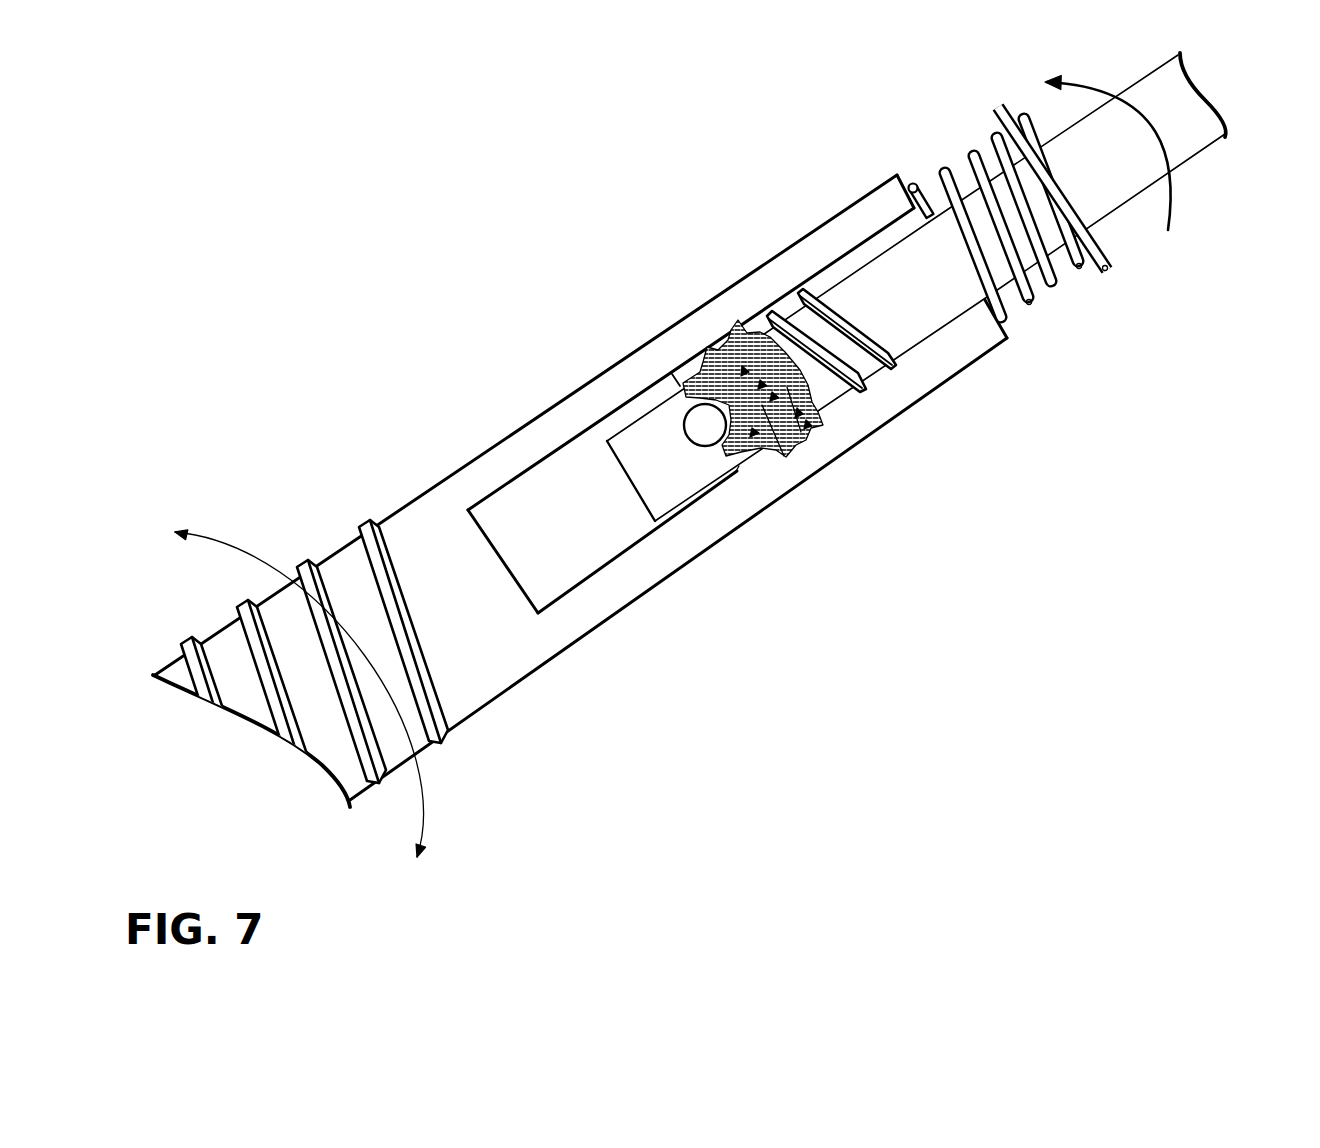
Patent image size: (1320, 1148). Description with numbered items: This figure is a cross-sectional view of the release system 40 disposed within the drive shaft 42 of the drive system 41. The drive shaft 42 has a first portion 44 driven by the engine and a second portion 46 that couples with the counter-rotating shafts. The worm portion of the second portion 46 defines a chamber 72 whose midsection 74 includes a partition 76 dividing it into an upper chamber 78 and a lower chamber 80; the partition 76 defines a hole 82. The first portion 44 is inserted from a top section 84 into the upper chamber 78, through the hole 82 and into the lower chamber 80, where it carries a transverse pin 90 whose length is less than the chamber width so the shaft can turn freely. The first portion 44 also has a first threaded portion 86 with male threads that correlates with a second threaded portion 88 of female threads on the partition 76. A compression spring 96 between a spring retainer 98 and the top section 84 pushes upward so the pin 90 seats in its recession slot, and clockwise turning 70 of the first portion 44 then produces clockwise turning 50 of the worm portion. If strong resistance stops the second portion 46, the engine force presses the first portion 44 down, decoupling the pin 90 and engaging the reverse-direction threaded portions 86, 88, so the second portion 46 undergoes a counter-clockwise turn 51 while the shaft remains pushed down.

The release system 40 is at (866, 363).
The drive system 41 is at (437, 480).
The drive shaft 42 is at (528, 680).
The first portion 44 is at (1207, 142).
The second portion 46 is at (464, 664).
The clockwise turning 50 is at (284, 693).
The counter-clockwise turn 51 is at (407, 867).
The clockwise turning 70 is at (1178, 192).
The chamber 72 is at (553, 578).
The midsection 74 is at (708, 358).
The partition 76 is at (801, 435).
The upper chamber 78 is at (928, 335).
The lower chamber 80 is at (620, 517).
The hole 82 is at (822, 412).
The top section 84 is at (912, 183).
The first threaded portion 86 is at (870, 395).
The second threaded portion 88 is at (828, 440).
The pin 90 is at (697, 420).
The compression spring 96 is at (1032, 306).
The spring retainer 98 is at (1110, 274).